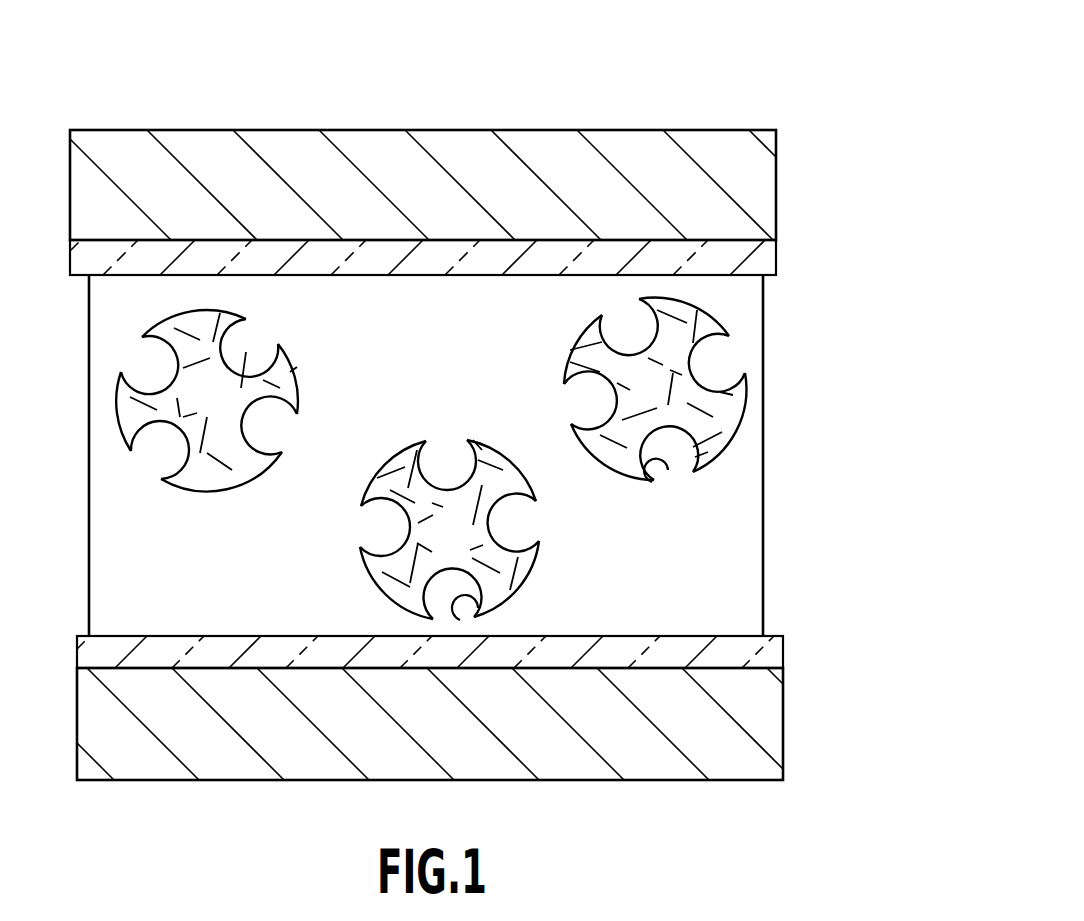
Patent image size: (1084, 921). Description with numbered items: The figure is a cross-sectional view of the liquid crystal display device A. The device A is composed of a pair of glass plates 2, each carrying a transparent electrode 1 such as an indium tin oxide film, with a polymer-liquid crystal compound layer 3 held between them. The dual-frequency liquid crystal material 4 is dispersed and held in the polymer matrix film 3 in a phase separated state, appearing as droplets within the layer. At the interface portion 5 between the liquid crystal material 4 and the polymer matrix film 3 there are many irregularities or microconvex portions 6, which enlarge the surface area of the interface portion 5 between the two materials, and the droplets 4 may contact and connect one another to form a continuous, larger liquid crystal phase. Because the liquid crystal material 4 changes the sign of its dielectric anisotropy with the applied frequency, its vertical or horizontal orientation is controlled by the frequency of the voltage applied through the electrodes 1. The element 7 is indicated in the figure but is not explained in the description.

The cell assembly A is at (710, 128).
The electrode layer 1 is at (763, 260).
The substrate plate 2 is at (760, 173).
The gap medium 3 is at (748, 550).
The spherical particle 4 is at (523, 573).
The particle body 5 is at (297, 401).
The recess 6 is at (128, 358).
The particle surface 7 is at (296, 369).